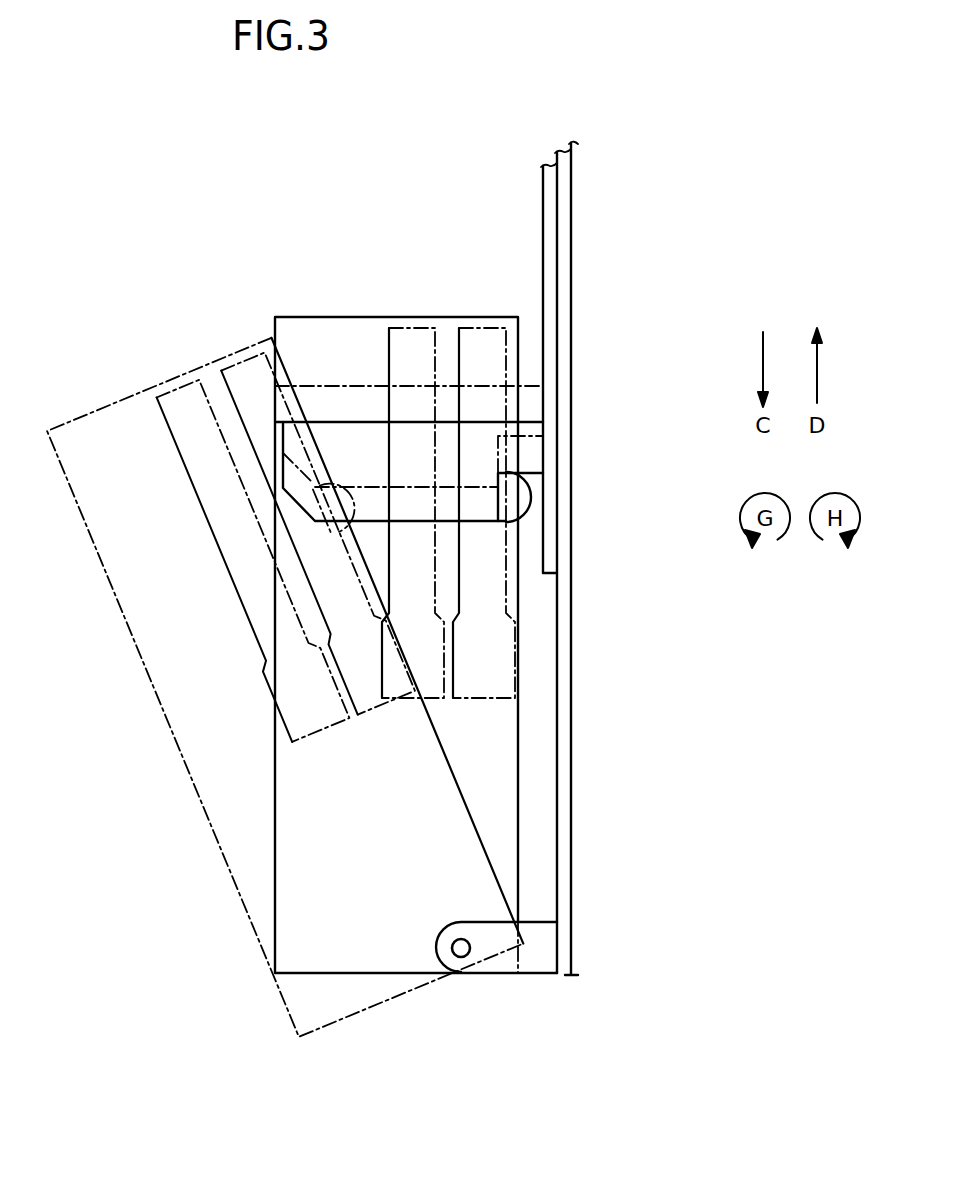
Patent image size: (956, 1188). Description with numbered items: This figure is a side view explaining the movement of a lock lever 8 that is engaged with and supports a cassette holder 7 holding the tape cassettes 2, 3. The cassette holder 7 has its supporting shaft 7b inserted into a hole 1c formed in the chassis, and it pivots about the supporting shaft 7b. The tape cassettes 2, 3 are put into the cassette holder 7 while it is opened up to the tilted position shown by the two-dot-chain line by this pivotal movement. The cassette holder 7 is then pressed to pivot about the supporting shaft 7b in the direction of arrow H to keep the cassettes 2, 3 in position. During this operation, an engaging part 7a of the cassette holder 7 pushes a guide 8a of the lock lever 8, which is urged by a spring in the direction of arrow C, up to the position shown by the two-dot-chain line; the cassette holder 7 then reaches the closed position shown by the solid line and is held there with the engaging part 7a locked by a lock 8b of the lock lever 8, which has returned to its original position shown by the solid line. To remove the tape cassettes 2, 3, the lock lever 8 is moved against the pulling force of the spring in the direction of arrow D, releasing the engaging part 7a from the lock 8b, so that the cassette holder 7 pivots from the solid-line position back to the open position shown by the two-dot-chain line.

The cassette holder 7 is at (318, 316).
The tape cassette 2 is at (403, 327).
The tape cassette 3 is at (486, 327).
The lock lever 8 is at (548, 245).
The guide 8a is at (416, 524).
The lock 8b is at (494, 524).
The engaging part 7a is at (520, 497).
The supporting shaft 7b is at (460, 973).
The hole 1c is at (468, 952).